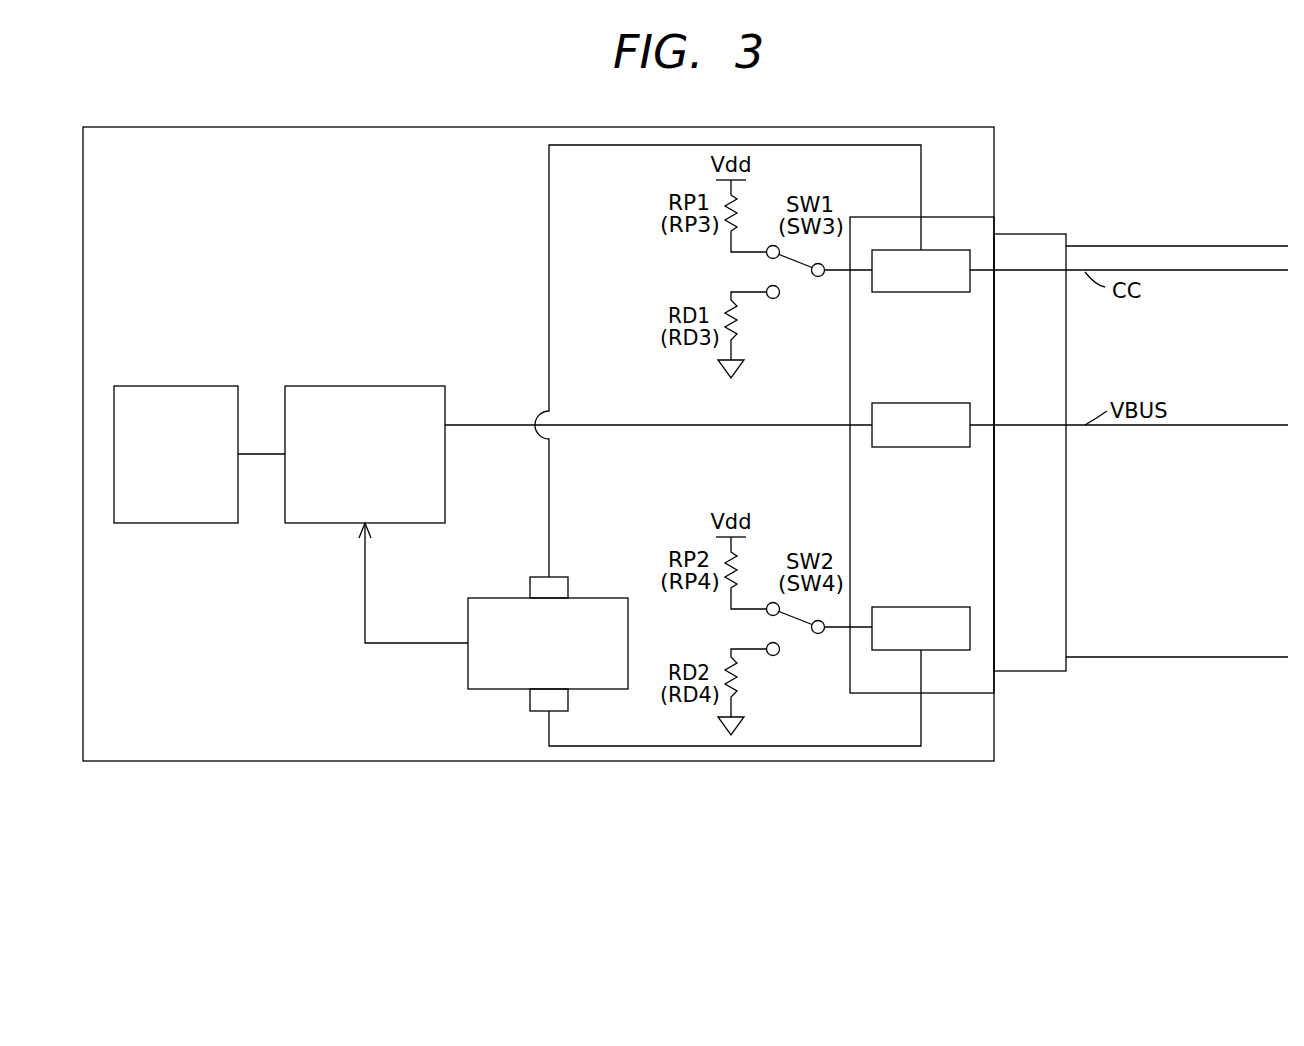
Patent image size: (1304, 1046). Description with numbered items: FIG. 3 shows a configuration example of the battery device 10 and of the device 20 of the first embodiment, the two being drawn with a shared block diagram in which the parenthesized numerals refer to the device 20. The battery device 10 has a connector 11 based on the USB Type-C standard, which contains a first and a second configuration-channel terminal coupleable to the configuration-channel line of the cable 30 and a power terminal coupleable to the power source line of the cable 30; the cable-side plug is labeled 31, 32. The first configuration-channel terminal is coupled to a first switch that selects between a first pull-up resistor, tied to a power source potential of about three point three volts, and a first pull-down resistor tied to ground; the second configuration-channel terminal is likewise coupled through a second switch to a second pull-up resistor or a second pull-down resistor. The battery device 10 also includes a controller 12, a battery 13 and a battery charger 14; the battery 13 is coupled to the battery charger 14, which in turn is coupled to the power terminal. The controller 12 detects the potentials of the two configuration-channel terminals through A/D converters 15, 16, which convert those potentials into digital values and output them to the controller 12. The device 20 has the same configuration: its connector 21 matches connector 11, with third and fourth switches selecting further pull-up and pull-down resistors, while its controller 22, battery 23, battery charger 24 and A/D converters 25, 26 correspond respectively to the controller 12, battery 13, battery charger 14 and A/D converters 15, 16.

The battery device 10 is at (547, 413).
The device 20 is at (1012, 91).
The connector 11 is at (967, 431).
The connector 21 is at (963, 213).
The controller 12 is at (555, 611).
The controller 22 is at (590, 597).
The battery 13 is at (176, 430).
The battery 23 is at (172, 383).
The battery charger 14 is at (365, 430).
The battery charger 24 is at (362, 383).
The A/D converter 15 is at (498, 579).
The A/D converter 25 is at (530, 587).
The A/D converter 16 is at (498, 707).
The A/D converter 26 is at (530, 702).
The cable 30 is at (1148, 246).
The cable plug 31 is at (1054, 437).
The cable plug (second embodiment) 32 is at (1028, 233).